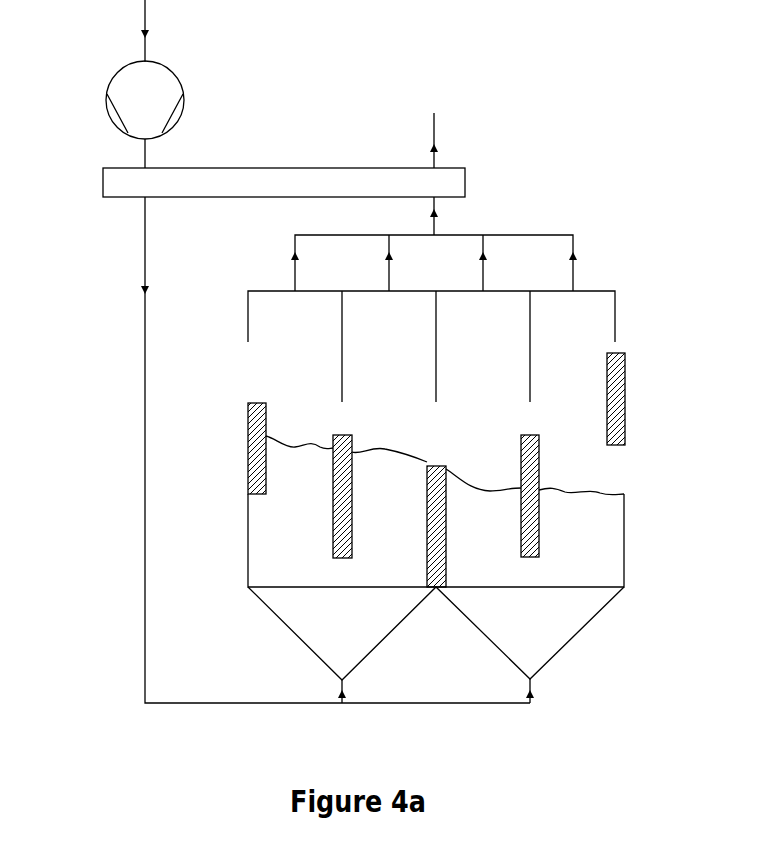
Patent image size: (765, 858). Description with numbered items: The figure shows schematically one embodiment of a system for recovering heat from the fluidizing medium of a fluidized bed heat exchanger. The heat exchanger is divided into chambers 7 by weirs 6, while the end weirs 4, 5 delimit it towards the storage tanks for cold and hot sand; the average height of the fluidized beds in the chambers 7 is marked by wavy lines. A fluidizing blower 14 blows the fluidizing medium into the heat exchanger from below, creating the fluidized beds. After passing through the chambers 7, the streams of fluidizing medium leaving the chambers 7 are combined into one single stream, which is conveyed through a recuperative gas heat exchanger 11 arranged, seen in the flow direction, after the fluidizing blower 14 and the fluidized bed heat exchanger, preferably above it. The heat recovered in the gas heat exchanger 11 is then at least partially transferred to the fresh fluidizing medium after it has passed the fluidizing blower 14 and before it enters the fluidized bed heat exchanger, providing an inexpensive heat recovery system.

The fluidizing blower 14 is at (128, 76).
The recuperative gas heat exchanger 11 is at (239, 182).
The weir 5 is at (617, 357).
The weir 4 is at (255, 457).
The weirs 6 is at (340, 516).
The chambers 7 is at (573, 533).